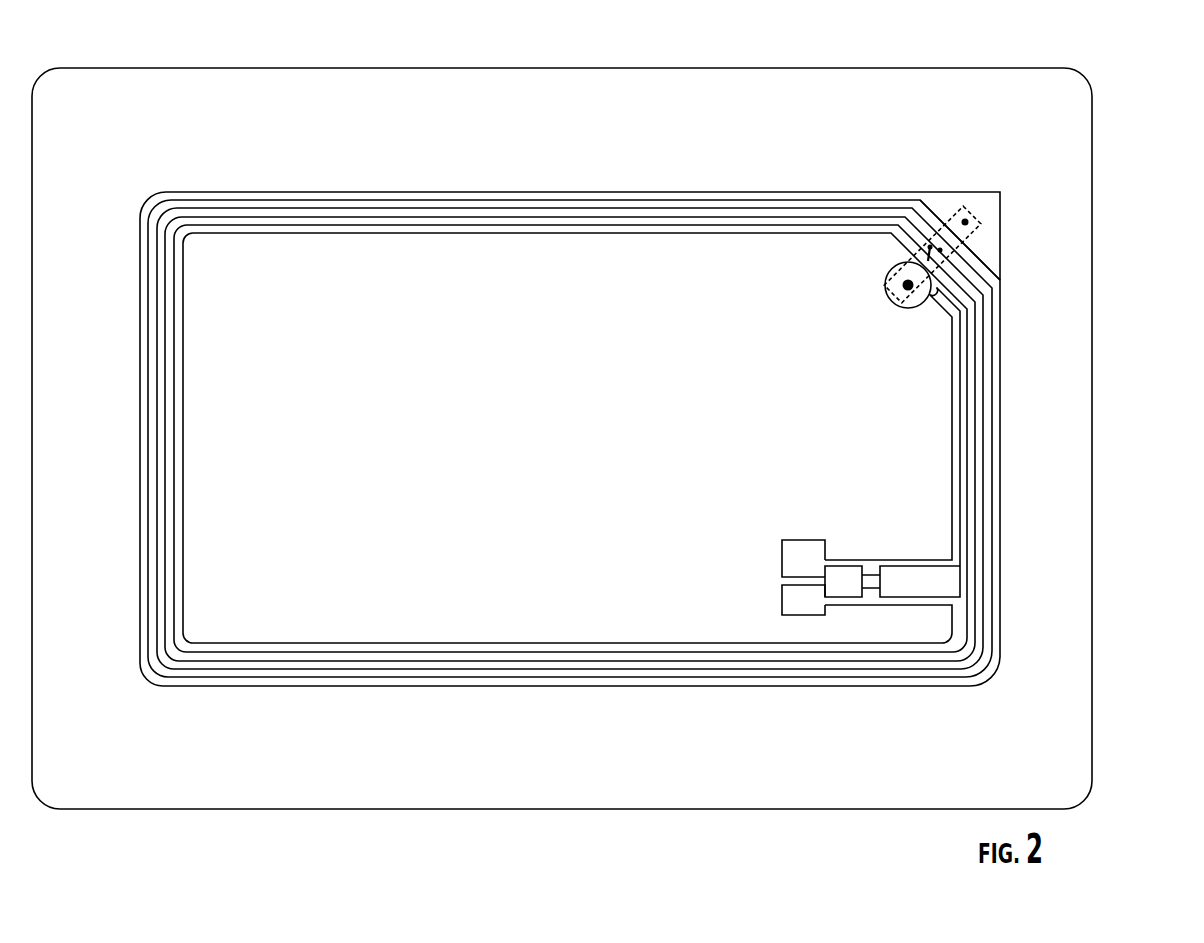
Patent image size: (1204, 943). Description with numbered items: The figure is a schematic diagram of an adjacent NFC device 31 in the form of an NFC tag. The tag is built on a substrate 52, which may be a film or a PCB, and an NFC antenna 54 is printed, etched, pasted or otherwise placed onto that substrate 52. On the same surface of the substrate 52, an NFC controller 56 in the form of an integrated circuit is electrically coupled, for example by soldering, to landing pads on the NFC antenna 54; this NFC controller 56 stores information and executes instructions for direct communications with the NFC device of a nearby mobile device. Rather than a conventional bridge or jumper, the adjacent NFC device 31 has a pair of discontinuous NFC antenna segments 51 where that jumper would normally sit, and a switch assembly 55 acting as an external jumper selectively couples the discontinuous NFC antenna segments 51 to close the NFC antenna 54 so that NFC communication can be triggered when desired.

The adjacent NFC device 31 is at (686, 62).
The substrate 52 is at (963, 102).
The NFC antenna 54 is at (777, 186).
The discontinuous NFC antenna segments 51 is at (986, 204).
The switch assembly 55 is at (983, 238).
The NFC controller 56 is at (870, 578).